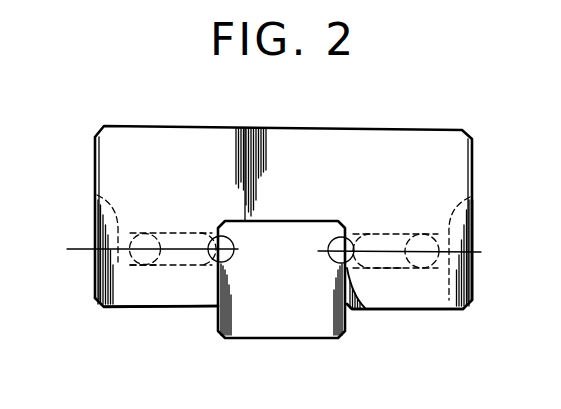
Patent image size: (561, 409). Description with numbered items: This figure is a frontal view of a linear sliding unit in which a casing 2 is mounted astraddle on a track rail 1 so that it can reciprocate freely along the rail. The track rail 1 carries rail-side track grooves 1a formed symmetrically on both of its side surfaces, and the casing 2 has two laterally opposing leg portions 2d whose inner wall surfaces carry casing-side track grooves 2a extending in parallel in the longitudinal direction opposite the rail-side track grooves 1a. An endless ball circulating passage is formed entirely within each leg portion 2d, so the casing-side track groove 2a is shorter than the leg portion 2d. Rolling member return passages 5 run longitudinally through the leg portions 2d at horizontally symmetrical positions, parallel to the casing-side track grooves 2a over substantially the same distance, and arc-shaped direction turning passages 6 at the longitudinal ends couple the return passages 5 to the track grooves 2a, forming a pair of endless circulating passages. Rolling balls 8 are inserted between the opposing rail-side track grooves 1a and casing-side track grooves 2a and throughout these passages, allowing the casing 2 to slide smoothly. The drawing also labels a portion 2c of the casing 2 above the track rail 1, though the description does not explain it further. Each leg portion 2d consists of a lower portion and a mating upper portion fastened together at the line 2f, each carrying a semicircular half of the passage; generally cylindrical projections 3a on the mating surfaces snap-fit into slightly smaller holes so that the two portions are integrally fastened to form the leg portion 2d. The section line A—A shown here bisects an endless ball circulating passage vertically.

The track rail 1 is at (286, 297).
The rail-side track grooves 1a is at (229, 263).
The casing 2 is at (286, 181).
The casing-side track grooves 2a is at (202, 242).
The recess of body 2c is at (303, 216).
The leg portions 2d is at (188, 307).
The line 2f is at (478, 251).
The cylindrical projections 3a is at (97, 196).
The rolling member return passages 5 is at (140, 266).
The direction turning passages 6 is at (390, 269).
The rolling balls 8 is at (364, 311).